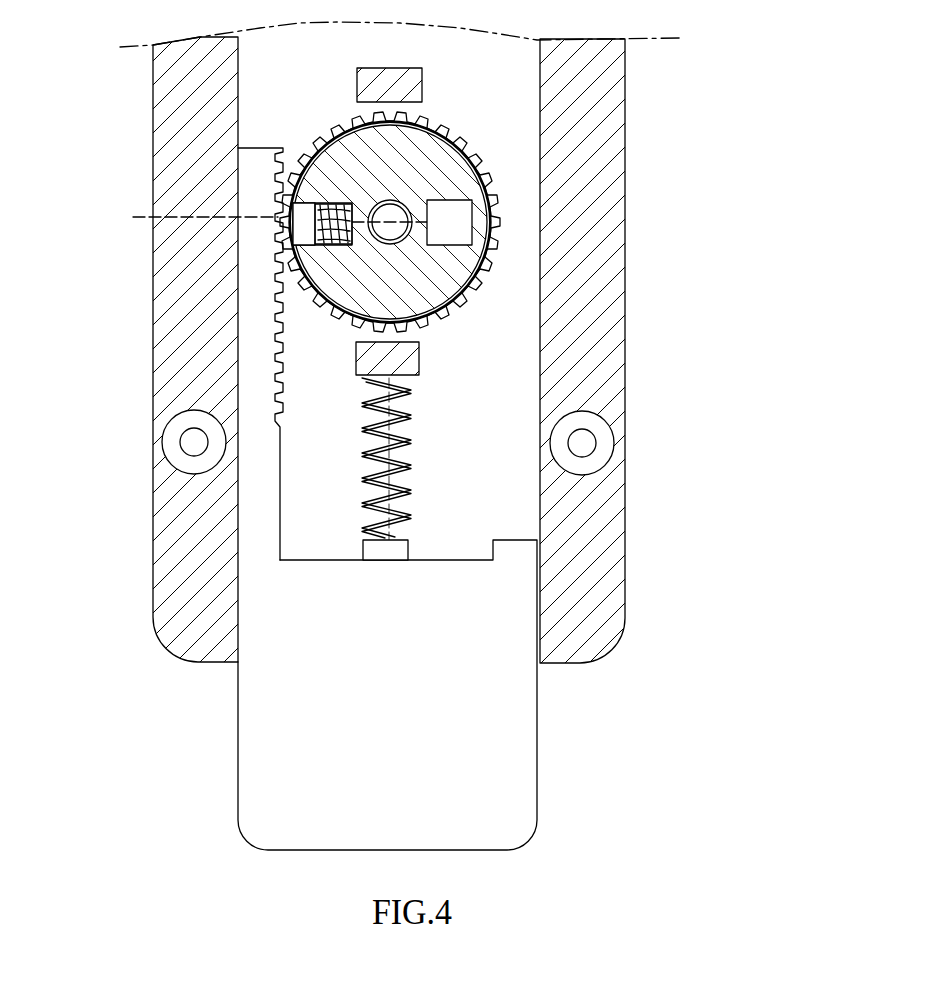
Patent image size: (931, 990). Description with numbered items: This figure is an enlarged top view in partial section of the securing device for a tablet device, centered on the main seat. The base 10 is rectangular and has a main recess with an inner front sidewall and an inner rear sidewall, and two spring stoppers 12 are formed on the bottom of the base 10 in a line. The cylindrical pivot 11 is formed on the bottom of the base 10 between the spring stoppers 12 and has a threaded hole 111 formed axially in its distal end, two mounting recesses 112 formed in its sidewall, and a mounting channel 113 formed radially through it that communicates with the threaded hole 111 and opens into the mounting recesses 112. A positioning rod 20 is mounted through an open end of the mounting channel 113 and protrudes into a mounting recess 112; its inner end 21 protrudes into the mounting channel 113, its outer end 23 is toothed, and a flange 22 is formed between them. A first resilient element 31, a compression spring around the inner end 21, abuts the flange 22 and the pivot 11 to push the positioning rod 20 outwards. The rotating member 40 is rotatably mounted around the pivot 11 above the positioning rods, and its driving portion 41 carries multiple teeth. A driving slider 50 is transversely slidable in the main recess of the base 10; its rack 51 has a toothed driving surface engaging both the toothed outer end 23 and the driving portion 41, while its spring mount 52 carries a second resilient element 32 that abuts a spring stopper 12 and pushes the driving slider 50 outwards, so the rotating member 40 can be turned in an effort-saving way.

The base 10 is at (180, 96).
The pivot 11 is at (407, 300).
The spring stopper 12 is at (385, 84).
The positioning rod 20 is at (228, 219).
The inner end 21 is at (360, 202).
The flange 22 is at (310, 238).
The outer end 23 is at (187, 217).
The first resilient element 31 is at (338, 242).
The second resilient element 32 is at (407, 463).
The rotating member 40 is at (497, 293).
The driving portion 41 is at (422, 342).
The driving slider 50 is at (483, 764).
The rack 51 is at (258, 385).
The spring mount 52 is at (398, 553).
The threaded hole 111 is at (390, 203).
The mounting recess 112 is at (462, 222).
The mounting channel 113 is at (470, 148).